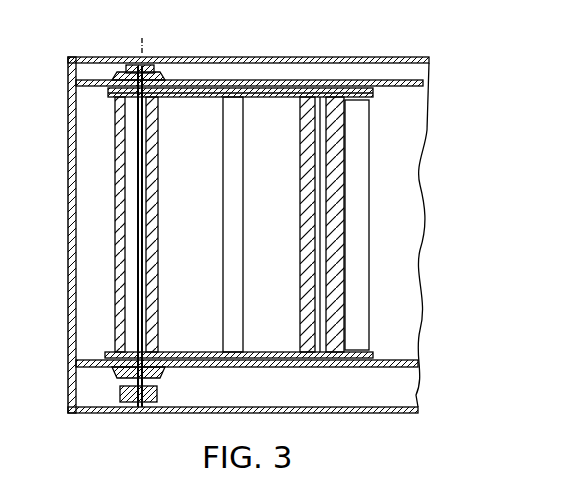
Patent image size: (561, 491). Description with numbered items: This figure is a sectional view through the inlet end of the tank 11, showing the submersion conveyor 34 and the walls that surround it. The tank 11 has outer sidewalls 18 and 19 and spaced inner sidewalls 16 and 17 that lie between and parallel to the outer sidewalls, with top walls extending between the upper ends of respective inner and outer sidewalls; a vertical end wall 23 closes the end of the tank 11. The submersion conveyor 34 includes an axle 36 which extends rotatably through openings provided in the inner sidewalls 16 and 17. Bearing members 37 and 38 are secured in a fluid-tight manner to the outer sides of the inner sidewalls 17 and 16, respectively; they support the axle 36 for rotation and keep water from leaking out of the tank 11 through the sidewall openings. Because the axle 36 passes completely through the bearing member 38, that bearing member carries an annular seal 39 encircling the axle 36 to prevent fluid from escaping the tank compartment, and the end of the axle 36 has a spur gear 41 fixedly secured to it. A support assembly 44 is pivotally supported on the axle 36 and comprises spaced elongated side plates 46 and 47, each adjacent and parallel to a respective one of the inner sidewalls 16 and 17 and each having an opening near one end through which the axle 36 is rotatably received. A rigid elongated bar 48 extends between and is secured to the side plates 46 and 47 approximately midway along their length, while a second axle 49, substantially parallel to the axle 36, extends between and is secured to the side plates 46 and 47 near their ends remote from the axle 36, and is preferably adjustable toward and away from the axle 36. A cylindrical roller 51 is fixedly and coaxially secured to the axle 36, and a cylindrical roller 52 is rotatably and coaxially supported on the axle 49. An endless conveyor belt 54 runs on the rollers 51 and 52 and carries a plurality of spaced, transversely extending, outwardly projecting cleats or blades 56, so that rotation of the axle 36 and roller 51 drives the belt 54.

The tank 11 is at (64, 118).
The inner sidewall 16 is at (402, 362).
The inner sidewall 17 is at (406, 88).
The outer sidewall 18 is at (390, 413).
The outer sidewall 19 is at (398, 57).
The vertical end wall 23 is at (68, 160).
The submersion conveyor 34 is at (385, 186).
The axle 36 is at (154, 70).
The bearing member 37 is at (137, 66).
The bearing member 38 is at (117, 378).
The annular seal 39 is at (157, 378).
The spur gear 41 is at (139, 413).
The support assembly 44 is at (251, 79).
The side plate 46 is at (277, 370).
The side plate 47 is at (282, 88).
The bar 48 is at (226, 116).
The axle 49 is at (316, 105).
The cylindrical roller 51 is at (190, 80).
The cylindrical roller 52 is at (349, 125).
The endless conveyor belt 54 is at (115, 227).
The cleats or blades 56 is at (357, 236).